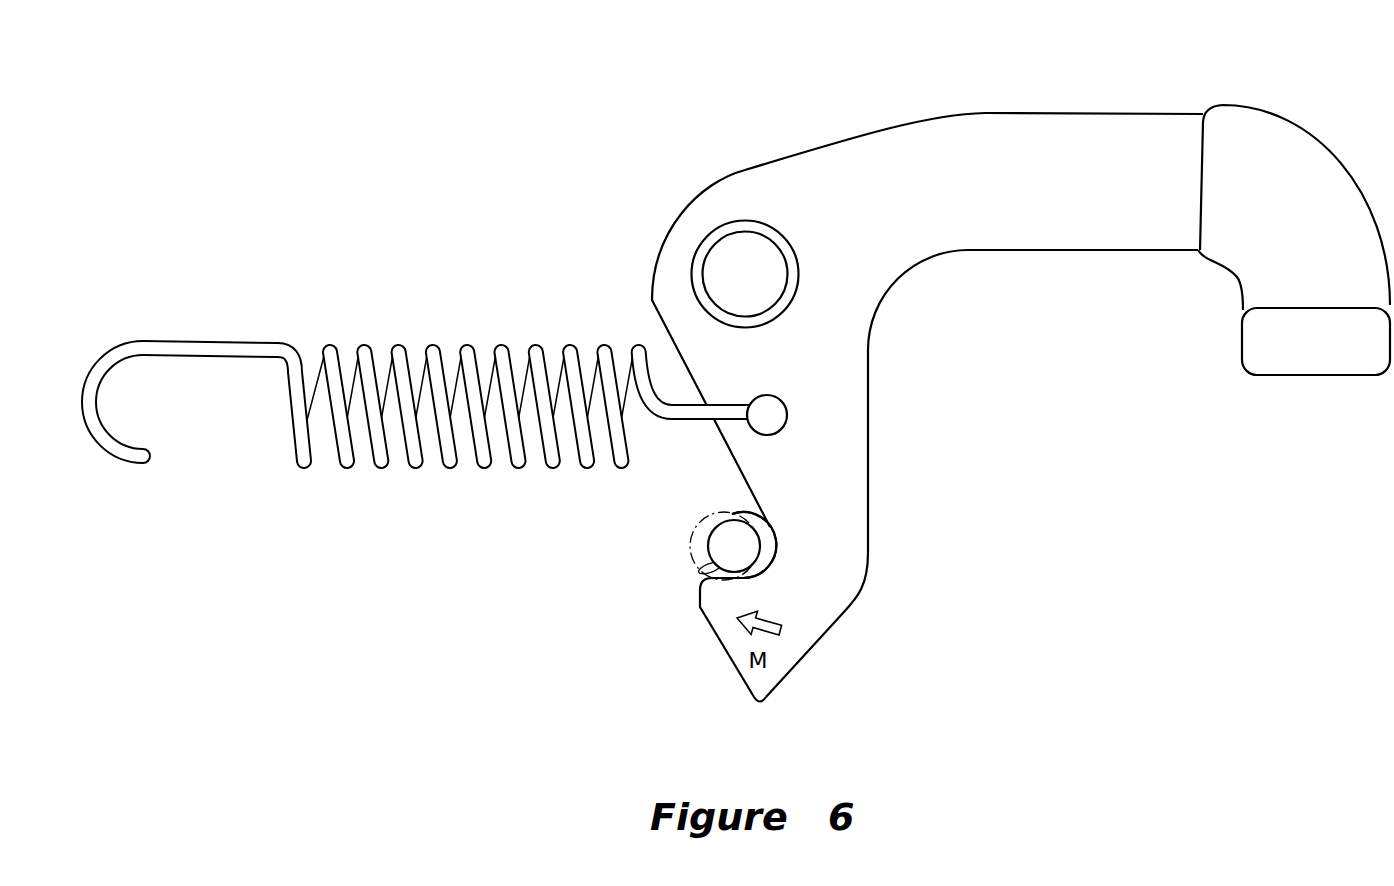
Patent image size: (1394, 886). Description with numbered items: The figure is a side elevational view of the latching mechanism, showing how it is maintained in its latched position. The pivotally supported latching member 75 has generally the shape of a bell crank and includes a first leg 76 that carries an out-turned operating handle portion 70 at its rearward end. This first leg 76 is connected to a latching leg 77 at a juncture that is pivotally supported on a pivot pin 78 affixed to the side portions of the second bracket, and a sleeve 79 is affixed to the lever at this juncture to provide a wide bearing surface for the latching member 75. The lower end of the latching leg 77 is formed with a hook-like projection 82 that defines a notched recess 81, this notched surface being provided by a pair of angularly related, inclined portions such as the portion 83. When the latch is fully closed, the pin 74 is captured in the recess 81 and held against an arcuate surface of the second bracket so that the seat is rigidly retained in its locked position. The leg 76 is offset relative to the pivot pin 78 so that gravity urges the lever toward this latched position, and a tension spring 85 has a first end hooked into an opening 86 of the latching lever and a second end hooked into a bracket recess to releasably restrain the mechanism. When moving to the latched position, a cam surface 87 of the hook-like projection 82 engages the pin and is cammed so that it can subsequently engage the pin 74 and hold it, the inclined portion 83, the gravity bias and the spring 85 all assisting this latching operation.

The operating handle portion 70 is at (1332, 352).
The pin 74 is at (757, 515).
The latching member 75 is at (1052, 265).
The first leg 76 is at (1118, 128).
The latching leg 77 is at (850, 420).
The pivot pin 78 is at (745, 252).
The sleeve 79 is at (792, 243).
The notched recess 81 is at (765, 533).
The hook-like projection 82 is at (797, 643).
The angularly related portion 83 is at (700, 565).
The tension spring 85 is at (217, 360).
The opening 86 is at (777, 401).
The cam surface 87 is at (727, 660).